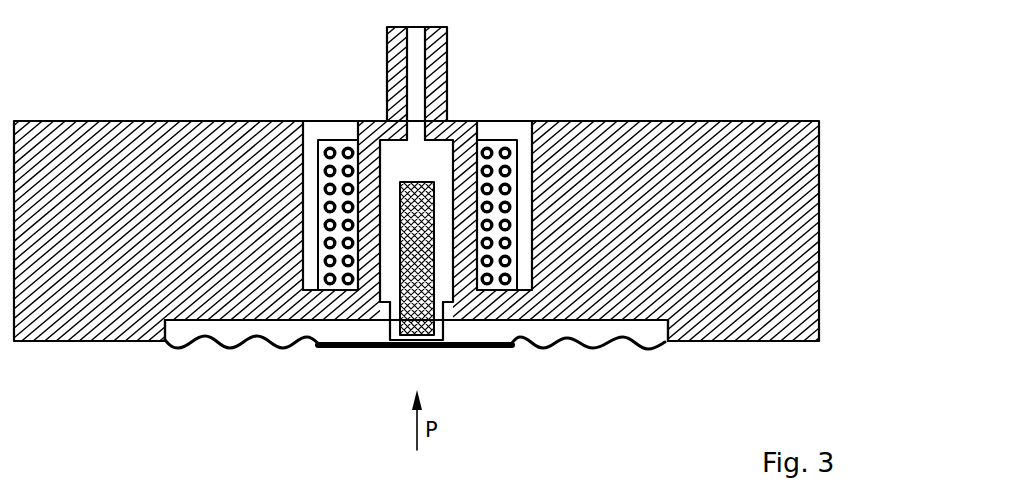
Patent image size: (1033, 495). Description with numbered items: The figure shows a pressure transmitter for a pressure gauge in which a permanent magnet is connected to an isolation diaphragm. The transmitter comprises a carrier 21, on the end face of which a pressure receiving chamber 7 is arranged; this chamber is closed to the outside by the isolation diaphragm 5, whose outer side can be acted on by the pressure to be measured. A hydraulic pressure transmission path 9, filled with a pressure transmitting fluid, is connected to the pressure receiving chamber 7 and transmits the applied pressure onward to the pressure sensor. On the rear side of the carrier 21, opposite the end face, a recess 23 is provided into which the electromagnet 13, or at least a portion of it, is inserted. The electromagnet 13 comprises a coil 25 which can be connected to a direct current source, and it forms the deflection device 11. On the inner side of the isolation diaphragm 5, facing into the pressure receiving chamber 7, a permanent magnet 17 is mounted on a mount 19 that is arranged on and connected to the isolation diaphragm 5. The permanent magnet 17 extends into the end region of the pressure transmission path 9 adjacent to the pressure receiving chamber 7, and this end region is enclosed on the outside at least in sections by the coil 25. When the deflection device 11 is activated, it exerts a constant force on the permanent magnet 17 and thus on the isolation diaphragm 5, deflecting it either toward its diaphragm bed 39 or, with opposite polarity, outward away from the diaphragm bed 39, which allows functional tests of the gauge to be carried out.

The carrier 21 is at (708, 142).
The hydraulic pressure transmission path 9 is at (417, 68).
The deflection device 11 is at (330, 205).
The electromagnet 13 is at (313, 173).
The coil 25 is at (505, 172).
The recess 23 is at (532, 202).
The permanent magnet 17 is at (405, 260).
The mount 19 is at (396, 312).
The isolation diaphragm 5 is at (470, 348).
The pressure receiving chamber 7 is at (537, 333).
The diaphragm bed 39 is at (577, 320).